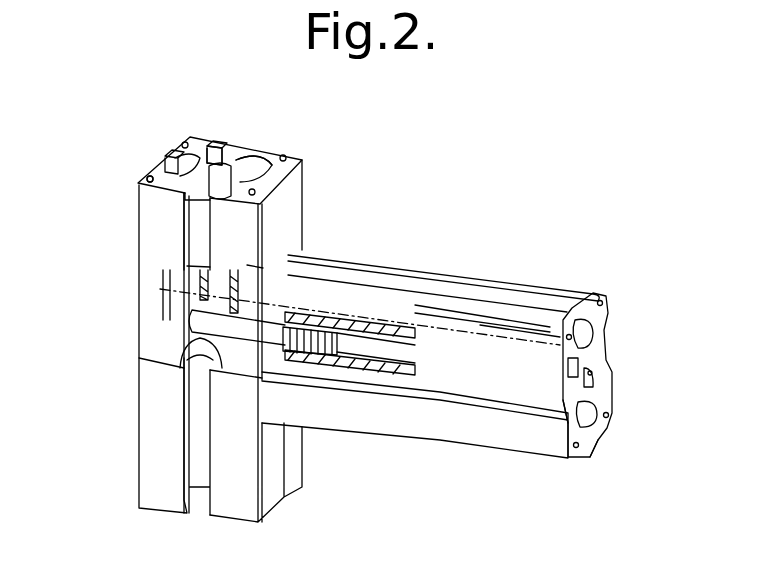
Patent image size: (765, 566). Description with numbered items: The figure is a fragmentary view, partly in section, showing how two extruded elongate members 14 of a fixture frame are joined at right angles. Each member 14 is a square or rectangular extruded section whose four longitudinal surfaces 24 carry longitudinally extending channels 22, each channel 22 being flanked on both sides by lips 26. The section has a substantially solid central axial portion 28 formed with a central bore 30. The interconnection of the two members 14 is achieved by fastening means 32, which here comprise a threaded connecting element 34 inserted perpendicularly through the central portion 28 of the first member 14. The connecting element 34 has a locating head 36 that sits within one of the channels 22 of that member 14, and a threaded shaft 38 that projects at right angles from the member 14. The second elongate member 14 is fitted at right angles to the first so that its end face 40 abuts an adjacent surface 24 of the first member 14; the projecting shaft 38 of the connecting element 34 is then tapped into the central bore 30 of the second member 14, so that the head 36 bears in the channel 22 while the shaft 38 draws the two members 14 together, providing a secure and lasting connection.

The elongate member 14 is at (147, 213).
The longitudinally extending channel 22 is at (598, 356).
The longitudinal surface 24 is at (548, 290).
The lip 26 is at (555, 385).
The central axial portion 28 is at (240, 163).
The central bore 30 is at (215, 140).
The fastening means 32 is at (128, 295).
The threaded connecting element 34 is at (215, 318).
The locating head 36 is at (178, 330).
The threaded shaft 38 is at (318, 357).
The end face 40 is at (177, 148).